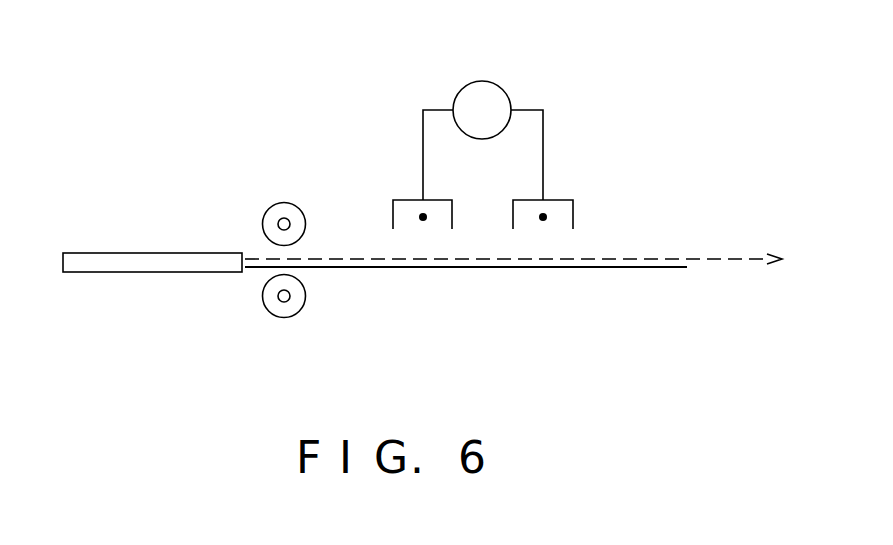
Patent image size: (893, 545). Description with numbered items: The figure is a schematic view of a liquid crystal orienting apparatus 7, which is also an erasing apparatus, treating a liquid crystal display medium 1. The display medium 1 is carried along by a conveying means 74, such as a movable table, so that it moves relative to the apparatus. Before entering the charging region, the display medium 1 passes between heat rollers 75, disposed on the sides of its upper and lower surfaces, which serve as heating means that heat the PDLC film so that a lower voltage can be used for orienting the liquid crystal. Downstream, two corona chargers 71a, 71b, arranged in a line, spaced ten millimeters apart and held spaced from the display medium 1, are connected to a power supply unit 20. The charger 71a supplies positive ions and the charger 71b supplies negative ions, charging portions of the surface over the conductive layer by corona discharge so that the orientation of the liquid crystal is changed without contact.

The liquid crystal display medium 1 is at (117, 229).
The liquid crystal orienting apparatus 7 is at (537, 77).
The power supply unit 20 is at (472, 82).
The charger 71a is at (412, 200).
The charger 71b is at (567, 199).
The conveying means 74 is at (482, 268).
The heat rollers 75 is at (284, 202).